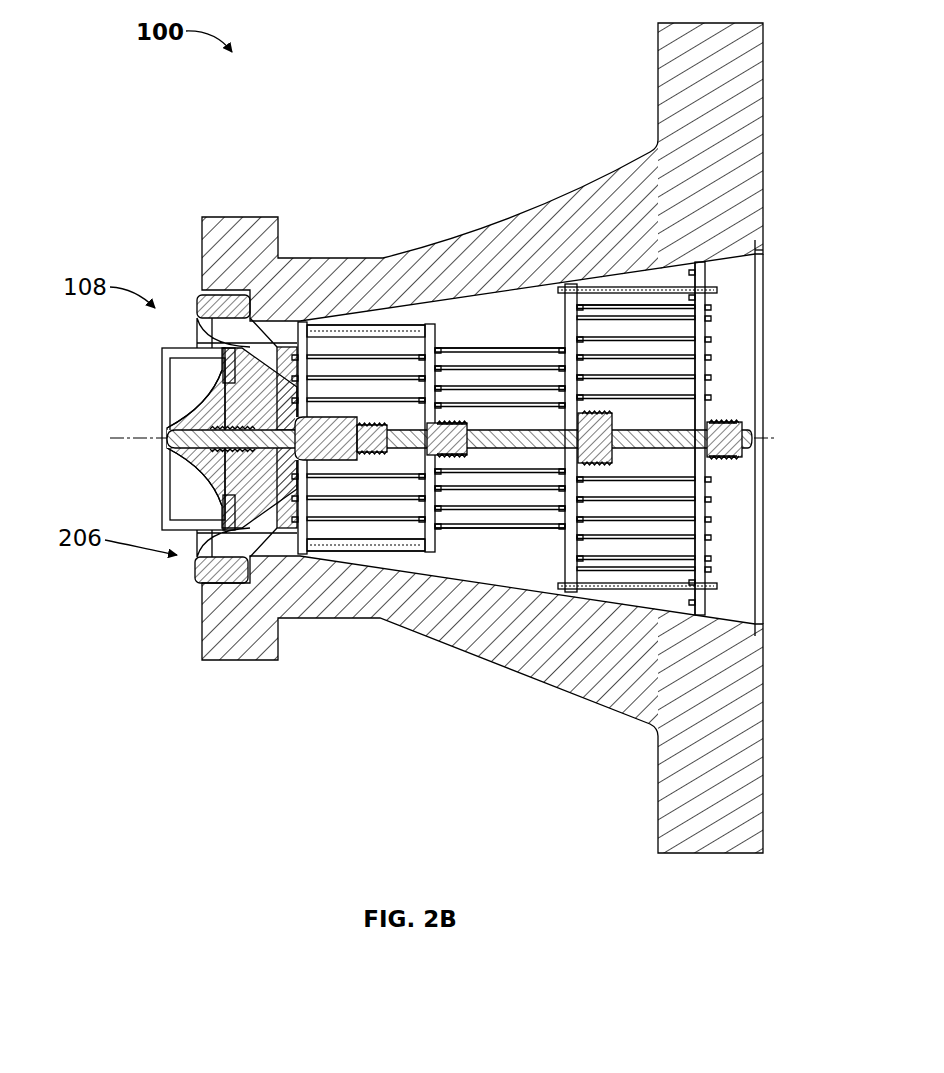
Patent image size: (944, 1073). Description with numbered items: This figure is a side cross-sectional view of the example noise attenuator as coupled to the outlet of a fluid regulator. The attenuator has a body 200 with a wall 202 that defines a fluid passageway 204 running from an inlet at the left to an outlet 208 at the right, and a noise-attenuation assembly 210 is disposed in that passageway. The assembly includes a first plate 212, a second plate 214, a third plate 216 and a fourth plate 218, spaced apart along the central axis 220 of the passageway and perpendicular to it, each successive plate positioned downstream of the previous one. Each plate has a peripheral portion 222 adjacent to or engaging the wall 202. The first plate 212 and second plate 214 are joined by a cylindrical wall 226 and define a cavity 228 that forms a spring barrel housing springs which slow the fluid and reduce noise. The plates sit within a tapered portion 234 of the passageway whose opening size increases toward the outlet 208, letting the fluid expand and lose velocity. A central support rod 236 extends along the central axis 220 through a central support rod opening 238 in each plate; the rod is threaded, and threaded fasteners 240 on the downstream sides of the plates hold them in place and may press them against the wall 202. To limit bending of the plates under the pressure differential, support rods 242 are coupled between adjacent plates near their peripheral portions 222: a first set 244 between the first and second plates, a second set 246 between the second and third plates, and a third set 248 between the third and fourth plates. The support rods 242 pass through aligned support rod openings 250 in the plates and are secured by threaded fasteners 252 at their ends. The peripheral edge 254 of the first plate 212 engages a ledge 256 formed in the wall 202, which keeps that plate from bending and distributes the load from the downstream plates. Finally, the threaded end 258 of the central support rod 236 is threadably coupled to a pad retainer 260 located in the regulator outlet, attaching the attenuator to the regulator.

The body 200 is at (212, 217).
The wall 202 is at (205, 349).
The fluid passageway 204 is at (200, 570).
The outlet 208 is at (782, 303).
The noise-attenuation assembly 210 is at (715, 528).
The first plate 212 is at (298, 345).
The second plate 214 is at (404, 322).
The third plate 216 is at (588, 330).
The fourth plate 218 is at (755, 253).
The central axis 220 is at (127, 438).
The peripheral portion 222 is at (563, 580).
The cylindrical wall 226 is at (428, 552).
The cavity 228 is at (362, 557).
The tapered portion 234 is at (443, 545).
The central support rod 236 is at (740, 427).
The central support rod opening 238 is at (445, 470).
The threaded fasteners 240 is at (453, 418).
The support rods 242 is at (546, 340).
The first set 244 is at (367, 322).
The second set 246 is at (470, 318).
The third set 248 is at (633, 282).
The support rod openings 250 is at (300, 553).
The threaded fasteners 252 is at (298, 550).
The peripheral edge 254 is at (300, 330).
The ledge 256 is at (338, 322).
The end 258 is at (222, 462).
The pad retainer 260 is at (218, 425).